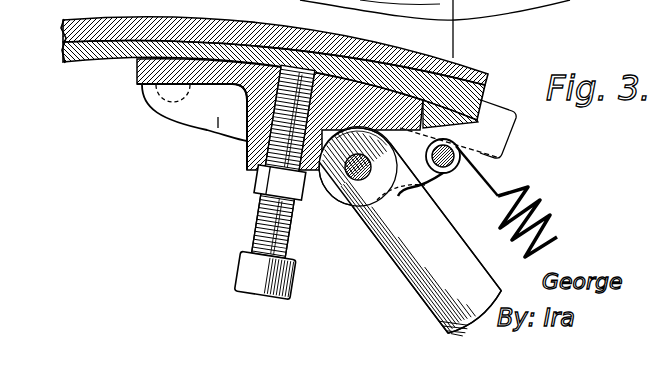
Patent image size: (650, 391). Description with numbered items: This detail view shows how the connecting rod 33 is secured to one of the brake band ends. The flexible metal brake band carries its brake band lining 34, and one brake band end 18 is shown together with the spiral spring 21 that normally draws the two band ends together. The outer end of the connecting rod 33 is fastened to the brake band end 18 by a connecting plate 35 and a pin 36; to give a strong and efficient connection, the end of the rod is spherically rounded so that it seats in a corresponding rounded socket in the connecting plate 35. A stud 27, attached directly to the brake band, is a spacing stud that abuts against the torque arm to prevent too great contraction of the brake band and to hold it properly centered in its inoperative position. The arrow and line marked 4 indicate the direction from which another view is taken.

The section line 4 is at (440, 43).
The brake band end 18 is at (480, 80).
The spiral spring 21 is at (553, 217).
The stud 27 is at (257, 225).
The connecting rod 33 is at (406, 230).
The brake band lining 34 is at (402, 53).
The connecting plate 35 is at (219, 118).
The pin 36 is at (352, 178).